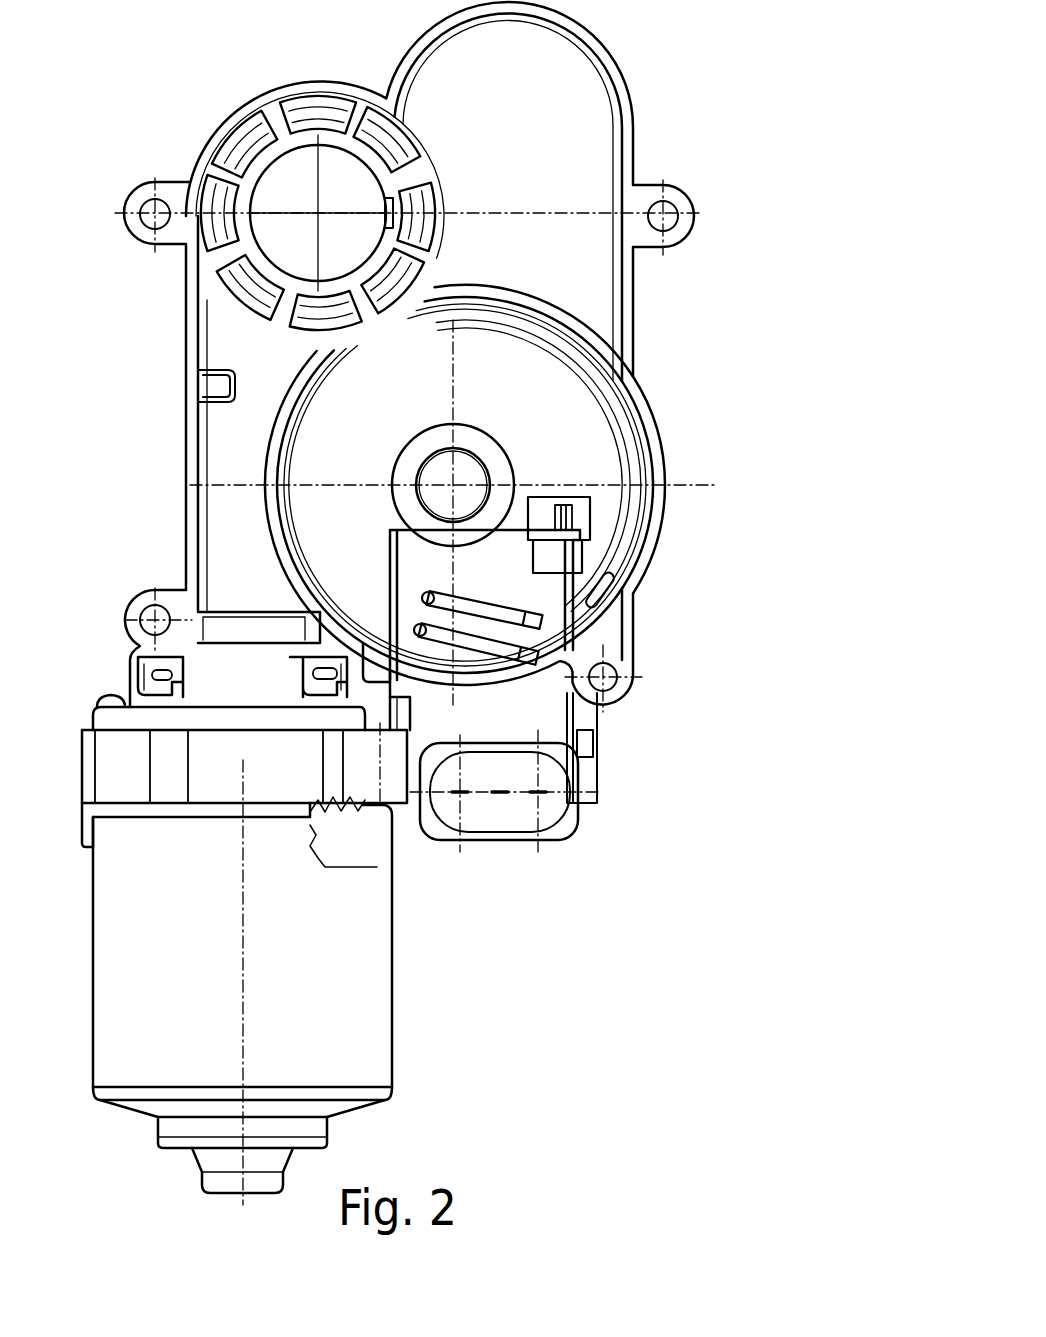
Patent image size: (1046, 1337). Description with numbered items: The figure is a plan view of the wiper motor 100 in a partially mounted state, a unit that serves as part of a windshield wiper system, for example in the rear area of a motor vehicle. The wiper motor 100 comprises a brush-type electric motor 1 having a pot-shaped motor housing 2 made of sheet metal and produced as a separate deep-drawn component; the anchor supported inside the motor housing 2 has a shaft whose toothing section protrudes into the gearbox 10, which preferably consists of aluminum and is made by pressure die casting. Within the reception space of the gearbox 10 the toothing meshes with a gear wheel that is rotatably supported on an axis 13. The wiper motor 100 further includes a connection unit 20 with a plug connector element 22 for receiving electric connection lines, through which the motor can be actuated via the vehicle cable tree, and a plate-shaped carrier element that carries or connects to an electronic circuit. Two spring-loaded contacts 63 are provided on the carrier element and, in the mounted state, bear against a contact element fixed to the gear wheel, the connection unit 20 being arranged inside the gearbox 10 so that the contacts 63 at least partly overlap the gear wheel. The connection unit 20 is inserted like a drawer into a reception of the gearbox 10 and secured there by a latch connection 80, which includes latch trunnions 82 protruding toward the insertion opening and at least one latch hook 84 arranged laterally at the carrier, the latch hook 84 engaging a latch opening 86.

The motor 1 is at (447, 1027).
The motor housing 2 is at (375, 993).
The gearbox 10 is at (645, 129).
The axis 13 is at (470, 465).
The connection unit 20 is at (550, 850).
The plug connector element 22 is at (572, 818).
The spring-loaded contacts 63 is at (458, 647).
The latch connection 80 is at (578, 492).
The latch trunnions 82 is at (565, 508).
The latch hook 84 is at (593, 740).
The latch opening 86 is at (578, 754).
The wiper motor 100 is at (768, 312).